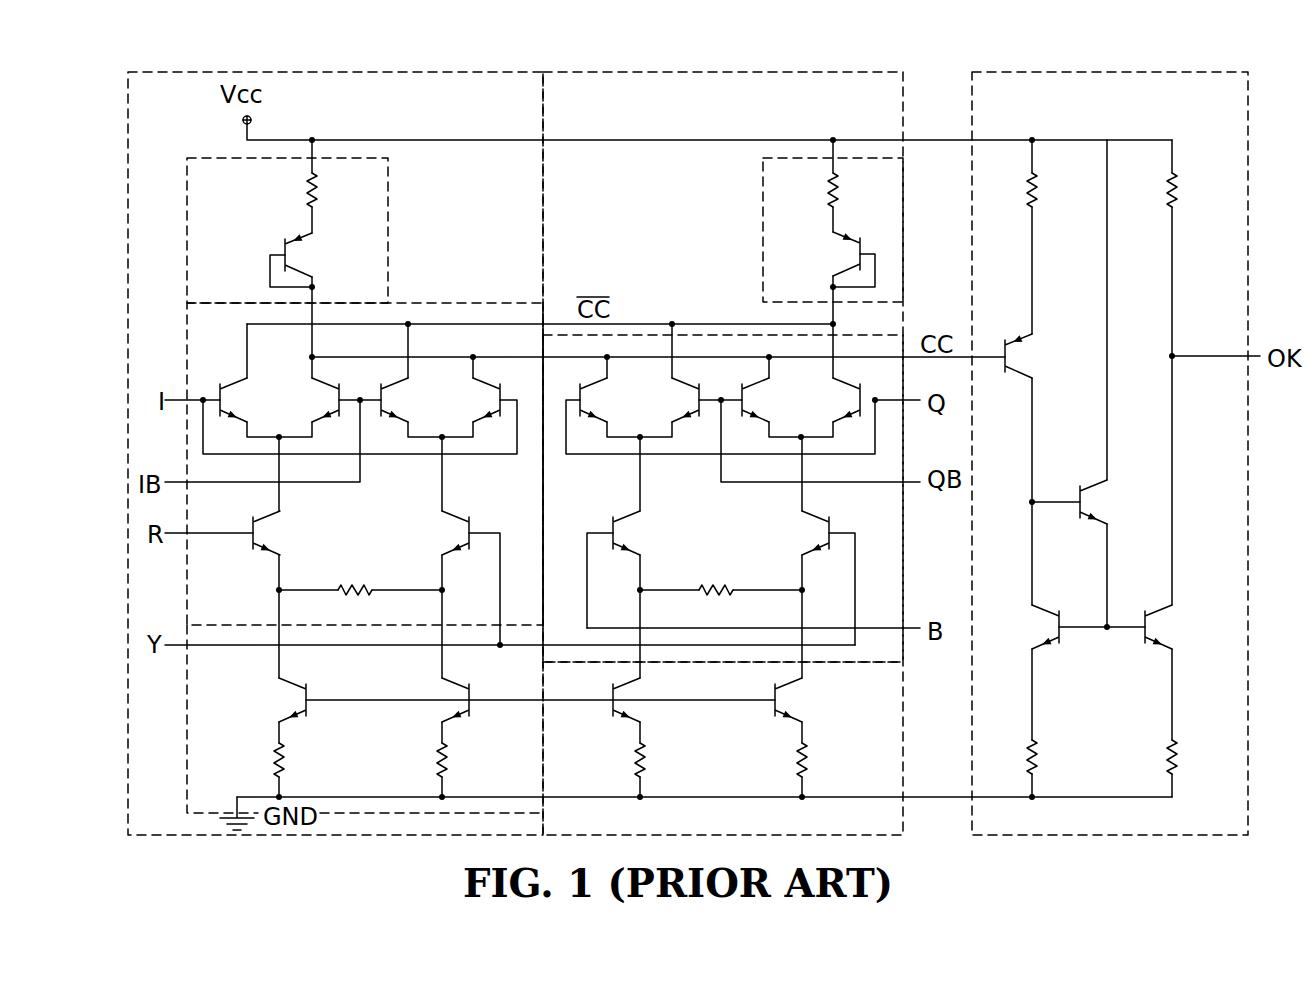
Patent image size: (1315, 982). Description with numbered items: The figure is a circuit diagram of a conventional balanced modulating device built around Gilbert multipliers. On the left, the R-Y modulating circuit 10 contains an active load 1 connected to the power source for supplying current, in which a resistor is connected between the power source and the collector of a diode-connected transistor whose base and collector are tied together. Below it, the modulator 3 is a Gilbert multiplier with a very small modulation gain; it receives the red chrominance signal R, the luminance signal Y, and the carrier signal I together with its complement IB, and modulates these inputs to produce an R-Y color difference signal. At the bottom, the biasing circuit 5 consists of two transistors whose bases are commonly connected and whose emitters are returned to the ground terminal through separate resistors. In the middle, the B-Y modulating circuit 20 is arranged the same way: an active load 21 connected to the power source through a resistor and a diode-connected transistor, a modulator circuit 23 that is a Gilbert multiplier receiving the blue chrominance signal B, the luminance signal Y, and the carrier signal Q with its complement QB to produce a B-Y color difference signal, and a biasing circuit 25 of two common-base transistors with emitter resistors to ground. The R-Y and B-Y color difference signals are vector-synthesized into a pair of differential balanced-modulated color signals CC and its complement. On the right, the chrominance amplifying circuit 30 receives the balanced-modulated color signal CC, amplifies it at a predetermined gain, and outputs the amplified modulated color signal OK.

The active load 1 is at (388, 192).
The modulator 3 is at (187, 342).
The biasing circuit 5 is at (187, 710).
The R-Y modulating circuit 10 is at (436, 70).
The B-Y modulating circuit 20 is at (741, 70).
The active load 21 is at (903, 225).
The modulator circuit 23 is at (903, 551).
The biasing circuit 25 is at (903, 710).
The chrominance amplifying circuit 30 is at (1091, 70).